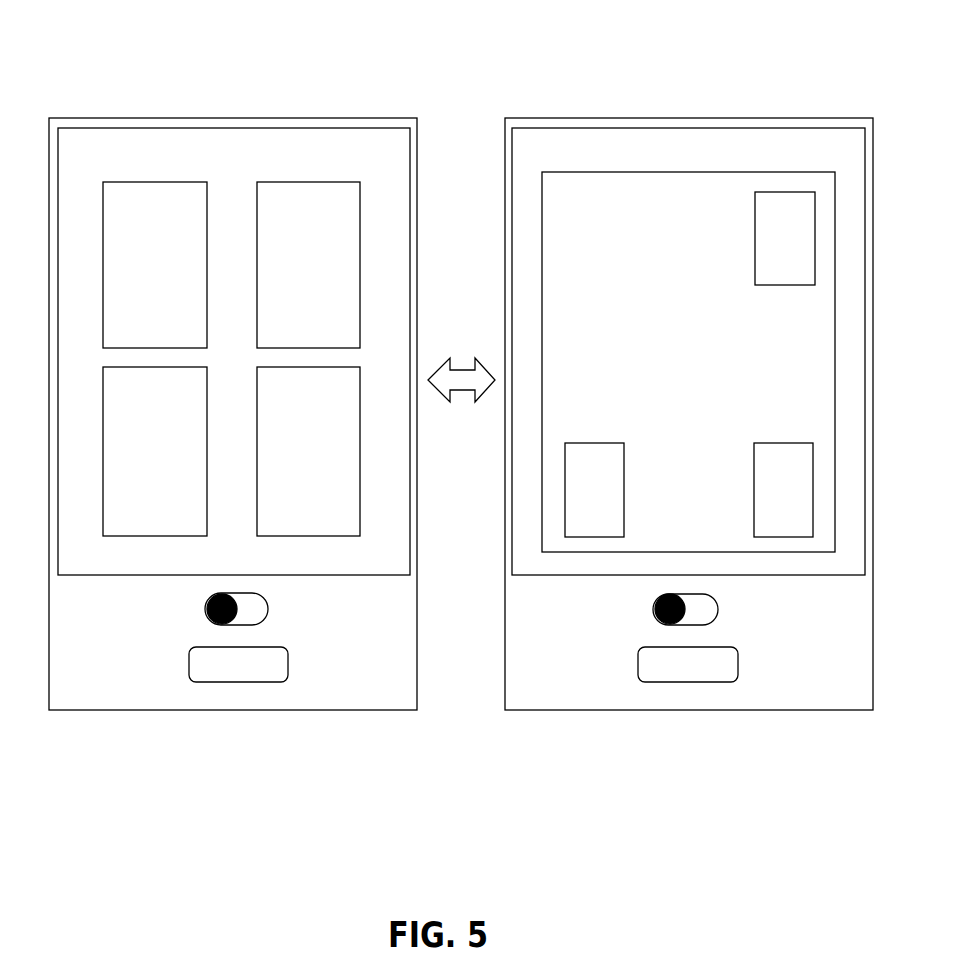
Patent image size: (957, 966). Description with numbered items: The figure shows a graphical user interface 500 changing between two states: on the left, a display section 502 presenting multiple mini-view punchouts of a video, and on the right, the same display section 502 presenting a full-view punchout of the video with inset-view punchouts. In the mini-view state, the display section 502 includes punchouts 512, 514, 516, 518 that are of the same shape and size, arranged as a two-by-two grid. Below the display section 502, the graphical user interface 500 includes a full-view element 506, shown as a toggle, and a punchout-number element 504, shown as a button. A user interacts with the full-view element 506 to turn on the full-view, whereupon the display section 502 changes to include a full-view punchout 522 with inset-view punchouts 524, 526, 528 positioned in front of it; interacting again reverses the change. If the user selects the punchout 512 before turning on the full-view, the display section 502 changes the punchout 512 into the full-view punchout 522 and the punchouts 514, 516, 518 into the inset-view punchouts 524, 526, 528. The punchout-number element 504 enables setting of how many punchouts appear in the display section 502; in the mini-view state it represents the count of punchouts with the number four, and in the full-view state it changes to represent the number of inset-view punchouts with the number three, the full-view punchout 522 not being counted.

The graphical user interface 500 is at (110, 118).
The display section 502 is at (255, 166).
The punchout-number element 504 is at (288, 651).
The full-view element 506 is at (205, 619).
The punchout 512 is at (155, 265).
The punchout 514 is at (308, 265).
The punchout 516 is at (155, 451).
The punchout 518 is at (308, 451).
The full-view punchout 522 is at (688, 362).
The inset-view punchout 524 is at (785, 238).
The inset-view punchout 526 is at (594, 490).
The inset-view punchout 528 is at (783, 490).